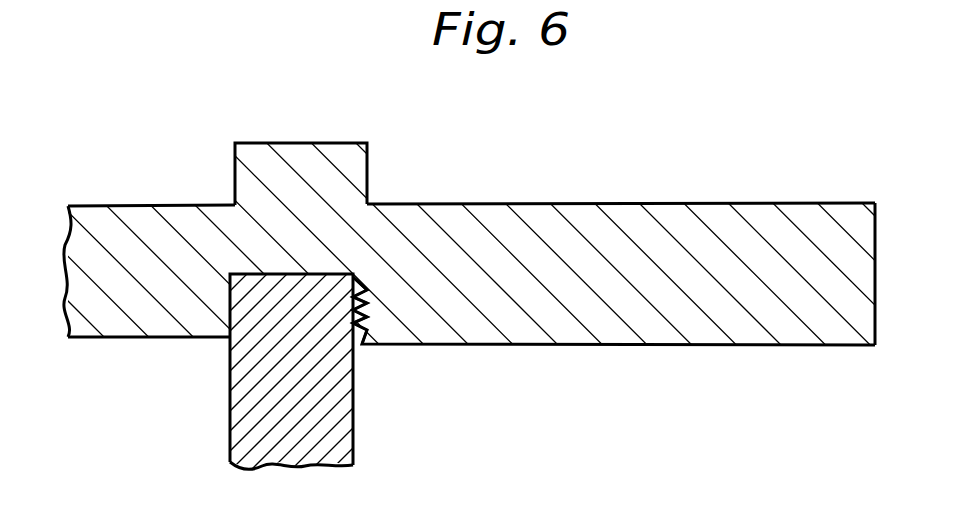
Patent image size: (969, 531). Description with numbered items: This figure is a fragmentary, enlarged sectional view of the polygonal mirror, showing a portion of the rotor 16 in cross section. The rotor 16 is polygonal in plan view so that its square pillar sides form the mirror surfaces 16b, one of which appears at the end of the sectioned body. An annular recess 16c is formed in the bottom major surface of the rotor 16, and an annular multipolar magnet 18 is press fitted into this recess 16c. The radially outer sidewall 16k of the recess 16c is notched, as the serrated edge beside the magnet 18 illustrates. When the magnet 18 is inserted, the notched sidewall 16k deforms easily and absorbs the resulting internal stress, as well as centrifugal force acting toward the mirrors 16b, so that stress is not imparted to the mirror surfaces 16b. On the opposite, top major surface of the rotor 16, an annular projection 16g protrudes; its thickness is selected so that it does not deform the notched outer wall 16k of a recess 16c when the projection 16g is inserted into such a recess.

The rotor 16 is at (664, 200).
The annular projection 16g is at (327, 143).
The mirror surfaces 16b is at (875, 302).
The annular recess 16c is at (267, 274).
The radially outer wall 16k is at (352, 309).
The annular multipolar magnet 18 is at (353, 422).